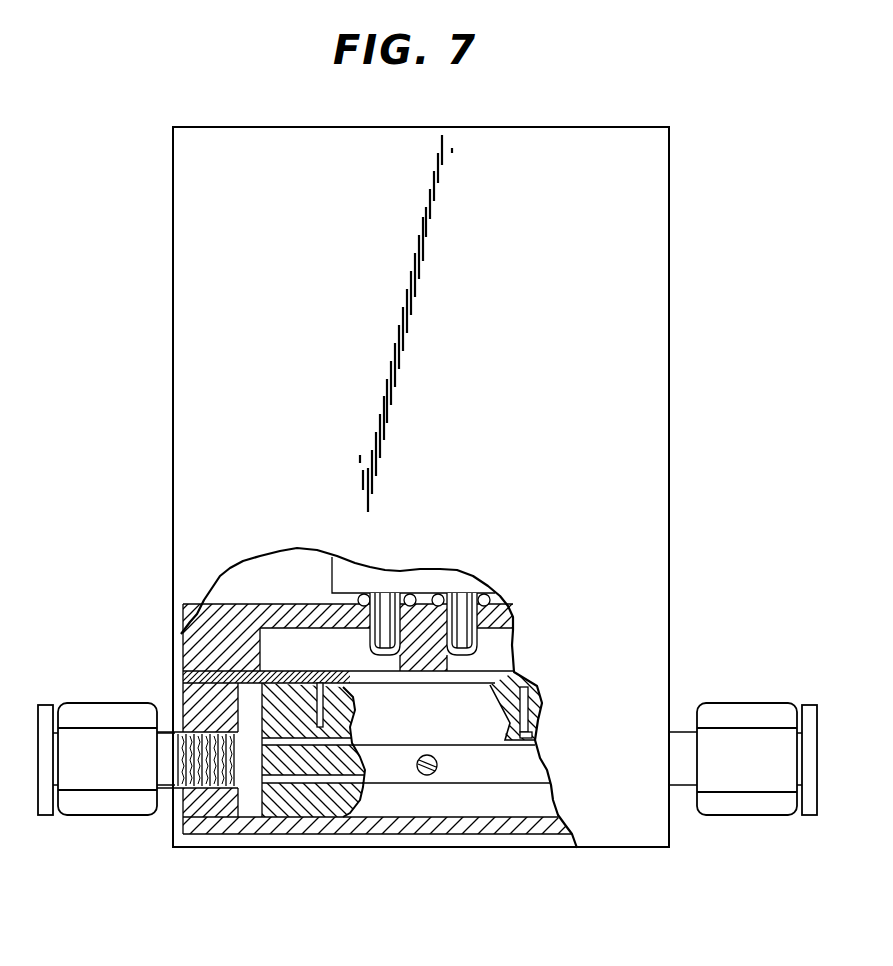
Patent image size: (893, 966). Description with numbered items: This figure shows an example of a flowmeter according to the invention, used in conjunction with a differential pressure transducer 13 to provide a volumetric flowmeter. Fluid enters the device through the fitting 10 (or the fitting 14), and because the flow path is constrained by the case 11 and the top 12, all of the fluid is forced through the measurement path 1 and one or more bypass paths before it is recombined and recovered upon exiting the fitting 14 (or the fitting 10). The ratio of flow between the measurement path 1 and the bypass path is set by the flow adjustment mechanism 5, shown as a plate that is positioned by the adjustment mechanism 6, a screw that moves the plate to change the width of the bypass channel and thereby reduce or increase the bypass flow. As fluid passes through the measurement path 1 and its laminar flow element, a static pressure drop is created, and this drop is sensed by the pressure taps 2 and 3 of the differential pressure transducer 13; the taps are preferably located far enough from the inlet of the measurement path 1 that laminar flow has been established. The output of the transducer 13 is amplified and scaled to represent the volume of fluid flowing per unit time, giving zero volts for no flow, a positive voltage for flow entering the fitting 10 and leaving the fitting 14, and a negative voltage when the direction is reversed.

The measurement path 1 is at (262, 737).
The pressure tap 2 is at (312, 681).
The pressure tap 3 is at (535, 690).
The flow adjustment mechanism 5 is at (305, 786).
The adjustment mechanism 6 is at (418, 776).
The fitting 10 is at (88, 717).
The case 11 is at (203, 815).
The top 12 is at (195, 657).
The differential pressure transducer 13 is at (360, 582).
The fitting 14 is at (765, 718).